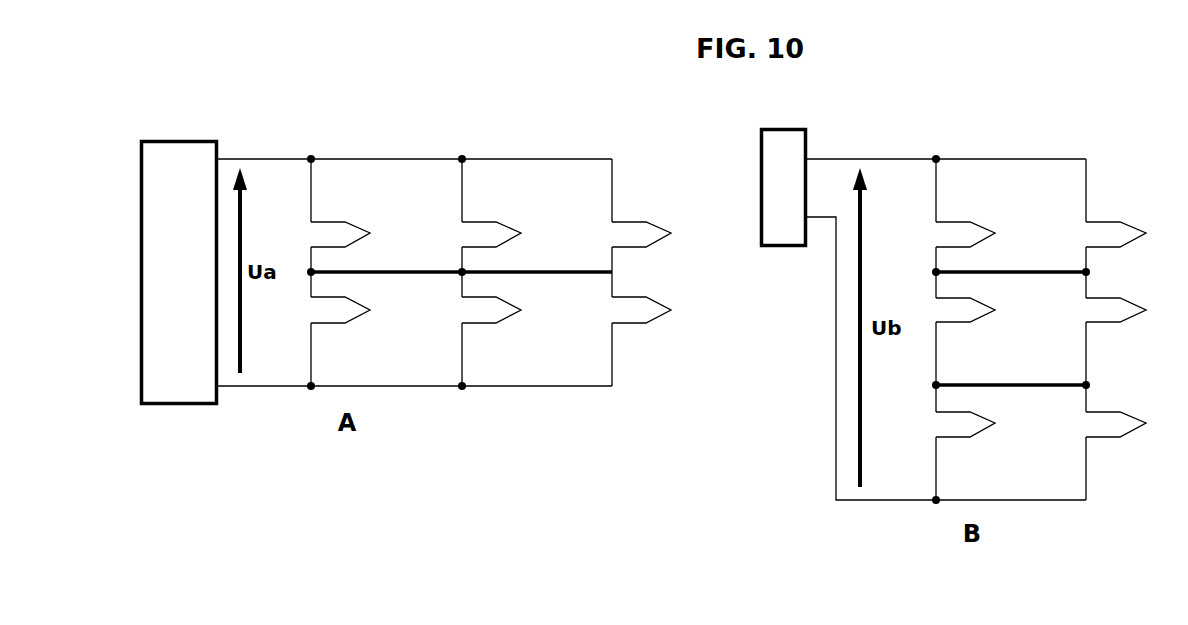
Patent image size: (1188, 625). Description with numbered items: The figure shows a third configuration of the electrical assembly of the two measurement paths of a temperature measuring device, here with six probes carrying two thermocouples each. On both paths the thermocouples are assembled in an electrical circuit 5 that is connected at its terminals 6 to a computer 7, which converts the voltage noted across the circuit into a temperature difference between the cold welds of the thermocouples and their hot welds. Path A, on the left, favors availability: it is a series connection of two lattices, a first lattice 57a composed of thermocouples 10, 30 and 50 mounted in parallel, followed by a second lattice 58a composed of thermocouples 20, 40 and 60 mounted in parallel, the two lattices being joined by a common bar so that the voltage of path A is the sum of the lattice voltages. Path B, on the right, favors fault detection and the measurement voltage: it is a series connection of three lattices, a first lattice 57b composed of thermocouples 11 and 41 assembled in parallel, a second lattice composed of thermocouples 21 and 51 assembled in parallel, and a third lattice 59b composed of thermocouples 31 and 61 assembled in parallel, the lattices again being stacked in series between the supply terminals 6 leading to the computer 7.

The electrical circuit 5 is at (378, 103).
The terminals 6 is at (272, 157).
The computer 7 is at (474, 267).
The thermocouple 10 is at (357, 234).
The thermocouple 20 is at (357, 310).
The thermocouple 30 is at (508, 234).
The thermocouple 40 is at (508, 310).
The thermocouple 50 is at (658, 234).
The thermocouple 60 is at (658, 310).
The thermocouple 11 is at (982, 234).
The thermocouple 21 is at (982, 310).
The thermocouple 31 is at (982, 424).
The thermocouple 41 is at (1132, 234).
The thermocouple 51 is at (1132, 310).
The thermocouple 61 is at (1132, 424).
The first lattice 57a is at (390, 190).
The first lattice 57b is at (1014, 188).
The connection line 58a is at (392, 358).
The third lattice 59b is at (1017, 470).